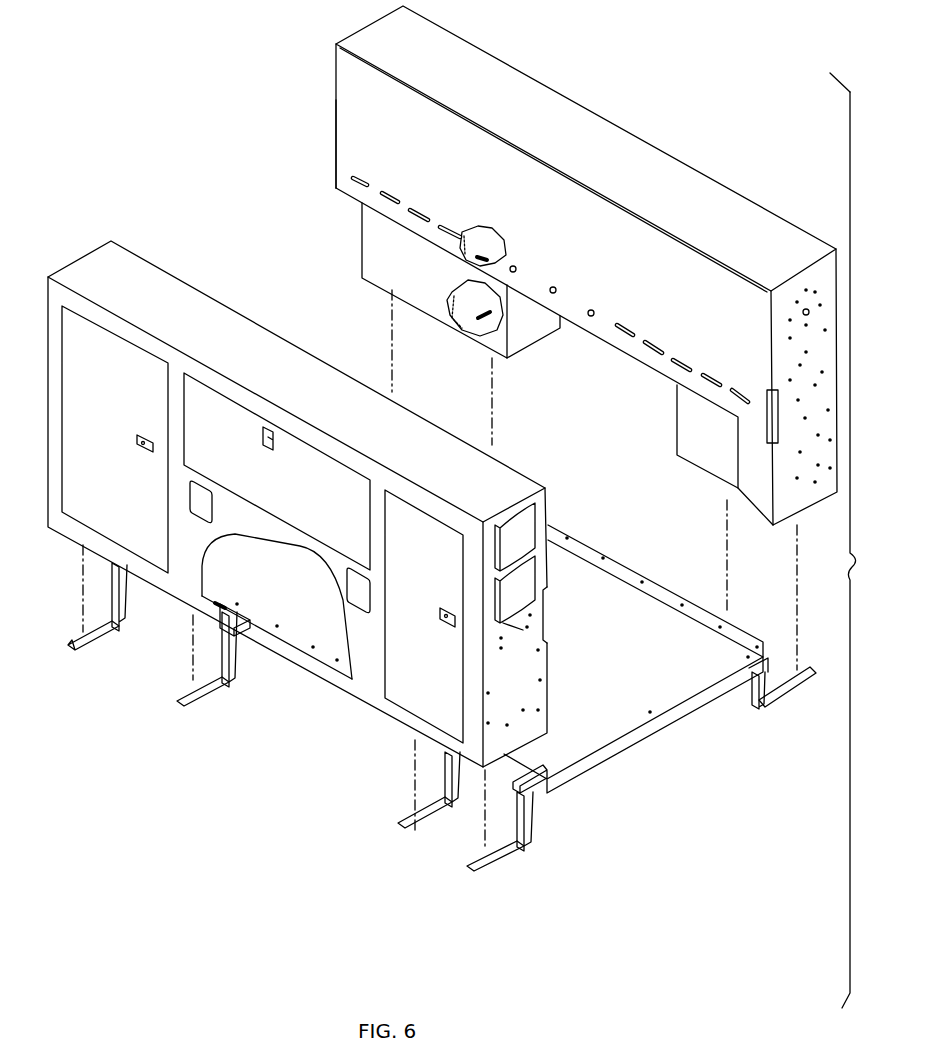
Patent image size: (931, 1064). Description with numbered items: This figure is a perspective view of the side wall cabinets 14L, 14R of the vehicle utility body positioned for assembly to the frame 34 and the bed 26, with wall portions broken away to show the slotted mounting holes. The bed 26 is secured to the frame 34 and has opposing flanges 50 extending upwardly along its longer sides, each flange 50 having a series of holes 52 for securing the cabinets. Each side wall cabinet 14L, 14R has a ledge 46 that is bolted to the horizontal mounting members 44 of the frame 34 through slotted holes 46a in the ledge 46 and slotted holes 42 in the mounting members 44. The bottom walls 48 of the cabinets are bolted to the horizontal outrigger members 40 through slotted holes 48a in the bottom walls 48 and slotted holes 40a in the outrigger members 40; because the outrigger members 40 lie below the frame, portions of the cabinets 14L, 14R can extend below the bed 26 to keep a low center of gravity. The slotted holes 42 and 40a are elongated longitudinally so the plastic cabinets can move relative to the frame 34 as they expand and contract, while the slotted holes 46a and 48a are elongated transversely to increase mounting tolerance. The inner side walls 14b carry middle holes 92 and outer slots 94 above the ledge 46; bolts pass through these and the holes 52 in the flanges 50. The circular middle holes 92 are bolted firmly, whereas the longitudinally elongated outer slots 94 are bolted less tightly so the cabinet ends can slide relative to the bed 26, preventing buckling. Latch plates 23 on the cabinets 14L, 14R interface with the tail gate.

The side wall cabinet 14L is at (94, 268).
The side wall cabinet 14R is at (538, 98).
The inner side wall 14b is at (478, 177).
The ledge 46 is at (352, 200).
The slotted holes 46a is at (480, 253).
The bottom walls 48 is at (478, 302).
The slotted holes 48a is at (514, 318).
The middle holes 92 is at (594, 312).
The outer slots 94 is at (360, 178).
The latch plates 23 is at (778, 433).
The flanges 50 is at (328, 647).
The holes 52 is at (277, 622).
The bed 26 is at (617, 681).
The frame 34 is at (748, 683).
The outrigger members 40 is at (107, 627).
The slotted holes 40a is at (82, 633).
The slotted holes 42 is at (217, 610).
The mounting members 44 is at (243, 622).